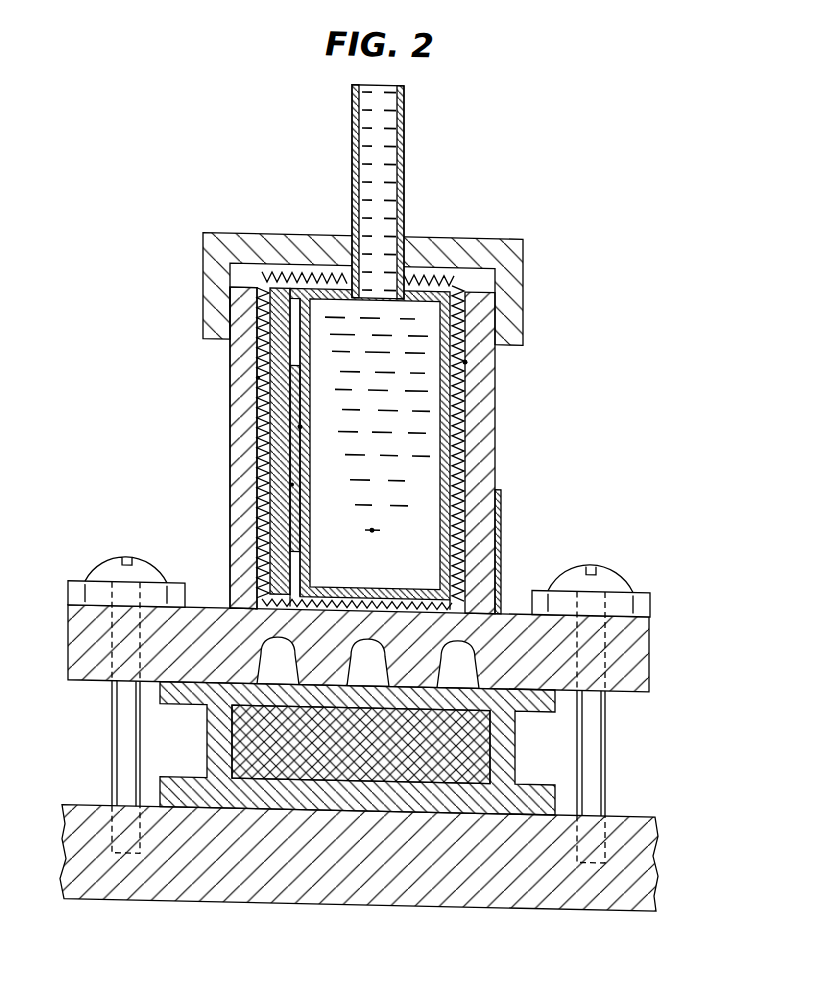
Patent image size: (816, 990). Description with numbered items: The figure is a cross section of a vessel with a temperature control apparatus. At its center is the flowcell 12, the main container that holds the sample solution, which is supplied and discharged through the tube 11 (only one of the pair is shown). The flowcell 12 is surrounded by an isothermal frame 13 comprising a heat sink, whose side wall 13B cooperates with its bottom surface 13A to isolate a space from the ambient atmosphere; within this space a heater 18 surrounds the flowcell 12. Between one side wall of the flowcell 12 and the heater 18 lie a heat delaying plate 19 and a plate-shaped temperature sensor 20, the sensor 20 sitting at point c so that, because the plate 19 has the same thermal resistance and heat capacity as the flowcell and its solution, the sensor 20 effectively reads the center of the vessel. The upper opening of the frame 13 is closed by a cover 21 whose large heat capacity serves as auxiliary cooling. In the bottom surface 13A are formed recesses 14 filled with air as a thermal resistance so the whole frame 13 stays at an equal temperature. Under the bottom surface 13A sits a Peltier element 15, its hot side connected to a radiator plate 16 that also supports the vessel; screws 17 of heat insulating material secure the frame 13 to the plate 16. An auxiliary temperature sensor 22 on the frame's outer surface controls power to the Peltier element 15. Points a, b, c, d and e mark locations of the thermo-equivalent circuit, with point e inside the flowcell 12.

The tube 11 is at (404, 158).
The flowcell 12 is at (450, 440).
The isothermal frame 13 is at (497, 462).
The bottom surface 13A is at (205, 668).
The side wall 13B is at (230, 395).
The recesses 14 is at (503, 614).
The Peltier element 15 is at (472, 748).
The radiator plate 16 is at (360, 893).
The screws 17 is at (112, 748).
The heater 18 is at (255, 457).
The heat delaying plate 19 is at (257, 507).
The temperature sensor 20 is at (290, 549).
The cover 21 is at (488, 247).
The auxiliary temperature sensor 22 is at (502, 544).
The point a is at (465, 360).
The point b is at (258, 380).
The point c is at (292, 486).
The point d is at (300, 428).
The point e is at (372, 530).